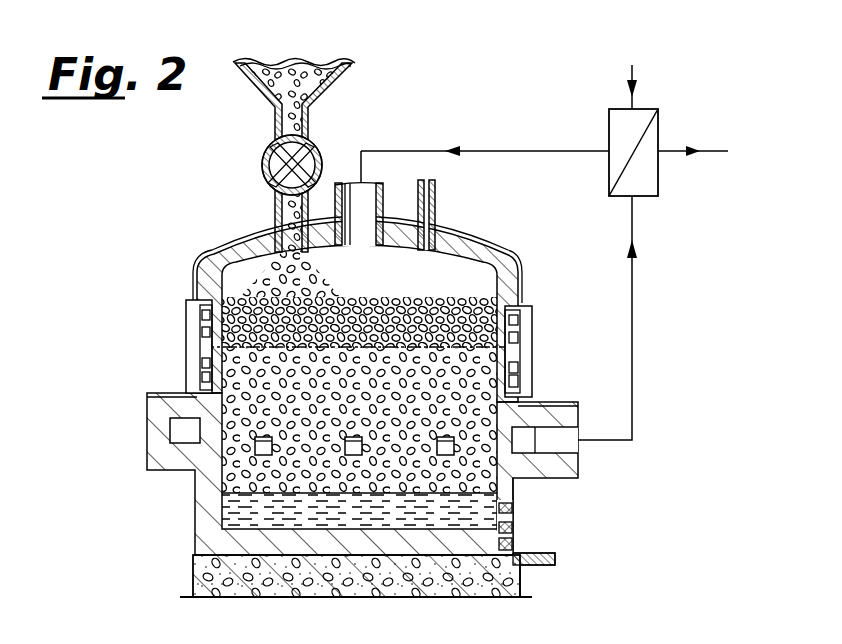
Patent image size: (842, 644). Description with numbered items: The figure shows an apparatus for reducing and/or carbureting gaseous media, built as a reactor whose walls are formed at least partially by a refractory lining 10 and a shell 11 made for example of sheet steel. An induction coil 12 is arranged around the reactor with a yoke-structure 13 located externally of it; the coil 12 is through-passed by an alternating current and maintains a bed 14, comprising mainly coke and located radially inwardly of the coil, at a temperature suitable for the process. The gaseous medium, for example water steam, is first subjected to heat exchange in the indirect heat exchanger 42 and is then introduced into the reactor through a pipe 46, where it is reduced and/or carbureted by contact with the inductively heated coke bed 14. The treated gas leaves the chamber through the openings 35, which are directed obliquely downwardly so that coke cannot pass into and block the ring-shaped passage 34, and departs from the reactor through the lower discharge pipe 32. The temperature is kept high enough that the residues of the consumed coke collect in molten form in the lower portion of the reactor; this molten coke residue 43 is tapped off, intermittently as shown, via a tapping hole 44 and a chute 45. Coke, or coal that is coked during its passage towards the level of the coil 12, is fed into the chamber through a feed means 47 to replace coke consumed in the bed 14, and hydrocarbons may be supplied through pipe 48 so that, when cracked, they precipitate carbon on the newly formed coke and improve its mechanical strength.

The refractory lining 10 is at (476, 250).
The shell 11 is at (520, 263).
The induction coil 12 is at (516, 331).
The yoke-structure 13 is at (528, 341).
The bed 14 is at (238, 368).
The lower discharge conduit 32 is at (551, 468).
The ring-shaped passage 34 is at (171, 430).
The openings 35 is at (217, 444).
The indirect heat exchanger 42 is at (656, 141).
The molten coke residue 43 is at (223, 500).
The tapping hole 44 is at (516, 526).
The chute 45 is at (522, 538).
The pipe 46 is at (381, 193).
The feed means 47 is at (307, 149).
The pipe 48 is at (433, 207).